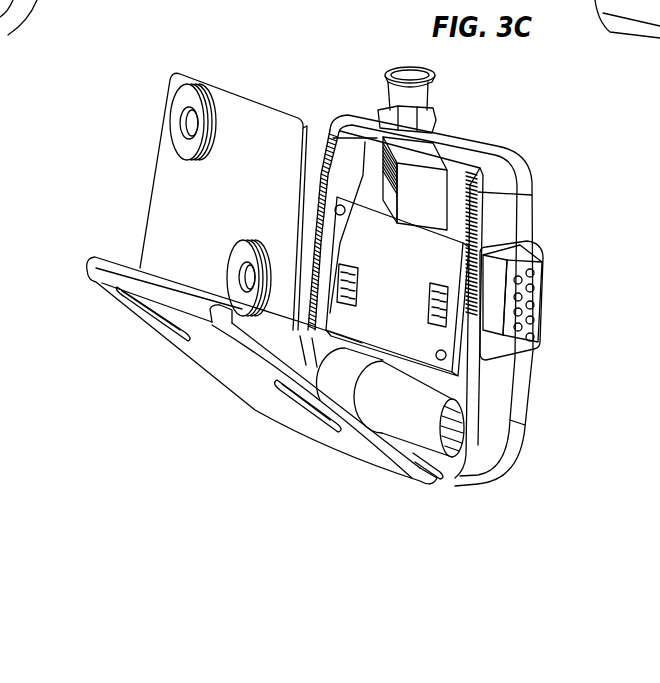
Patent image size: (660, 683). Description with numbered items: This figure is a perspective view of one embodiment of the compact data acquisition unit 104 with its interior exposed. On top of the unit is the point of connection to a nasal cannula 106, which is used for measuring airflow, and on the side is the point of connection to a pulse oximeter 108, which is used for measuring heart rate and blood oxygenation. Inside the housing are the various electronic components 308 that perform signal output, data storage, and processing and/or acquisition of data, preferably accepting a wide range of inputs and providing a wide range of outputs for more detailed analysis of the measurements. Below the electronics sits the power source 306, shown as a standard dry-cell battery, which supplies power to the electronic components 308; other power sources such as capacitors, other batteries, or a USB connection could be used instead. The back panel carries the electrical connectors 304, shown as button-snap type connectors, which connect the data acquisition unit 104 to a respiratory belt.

The data acquisition unit 104 is at (531, 180).
The point of connection to a nasal cannula 106 is at (428, 95).
The point of connection to a pulse oximeter 108 is at (542, 310).
The electrical connectors 304 is at (170, 118).
The power source 306 is at (440, 428).
The electronic components 308 is at (367, 220).